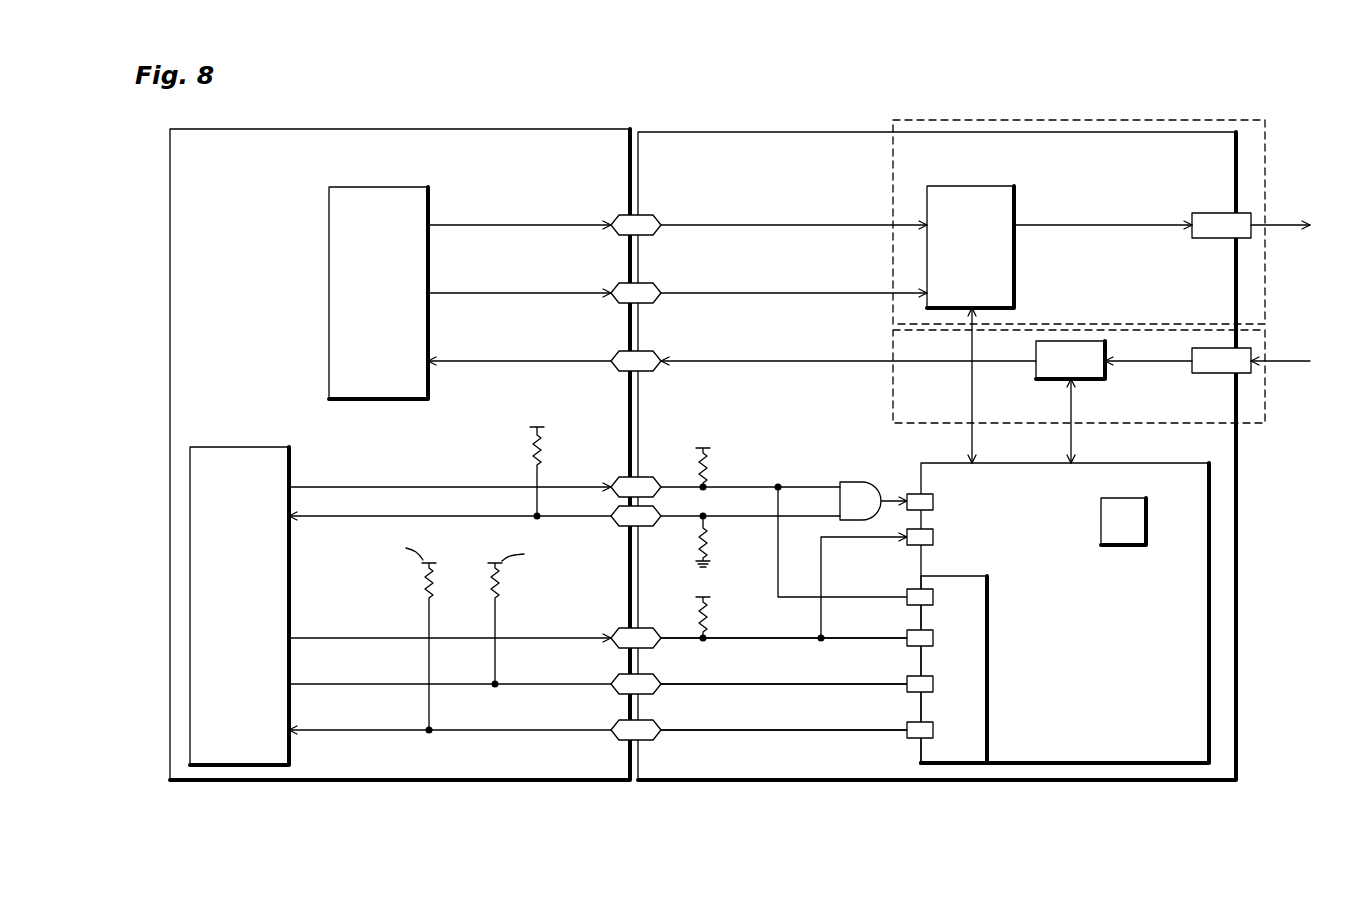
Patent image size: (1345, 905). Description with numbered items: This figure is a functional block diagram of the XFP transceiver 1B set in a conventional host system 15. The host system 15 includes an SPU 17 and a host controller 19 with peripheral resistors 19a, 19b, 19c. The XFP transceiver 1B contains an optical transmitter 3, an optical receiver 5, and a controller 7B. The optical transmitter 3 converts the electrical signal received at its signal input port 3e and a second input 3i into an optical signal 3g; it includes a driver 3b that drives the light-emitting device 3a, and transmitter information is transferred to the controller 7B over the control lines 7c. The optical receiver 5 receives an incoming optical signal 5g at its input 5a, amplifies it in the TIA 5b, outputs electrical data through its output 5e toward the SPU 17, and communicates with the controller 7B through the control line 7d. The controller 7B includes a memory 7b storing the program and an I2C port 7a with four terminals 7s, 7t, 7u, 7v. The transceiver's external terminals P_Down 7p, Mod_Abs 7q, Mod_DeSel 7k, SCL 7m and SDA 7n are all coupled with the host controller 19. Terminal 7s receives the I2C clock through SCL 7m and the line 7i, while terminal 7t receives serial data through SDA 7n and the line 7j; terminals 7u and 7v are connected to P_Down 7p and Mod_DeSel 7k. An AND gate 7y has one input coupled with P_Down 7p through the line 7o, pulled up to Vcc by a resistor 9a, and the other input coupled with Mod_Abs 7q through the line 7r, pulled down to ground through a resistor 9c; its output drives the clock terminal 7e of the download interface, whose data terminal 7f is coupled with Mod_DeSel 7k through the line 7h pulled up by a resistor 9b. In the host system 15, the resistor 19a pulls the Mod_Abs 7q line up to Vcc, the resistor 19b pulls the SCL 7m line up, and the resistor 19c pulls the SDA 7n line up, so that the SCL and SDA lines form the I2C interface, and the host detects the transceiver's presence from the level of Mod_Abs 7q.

The host system 15 is at (301, 129).
The SPU 17 is at (383, 187).
The host controller 19 is at (274, 447).
The resistor 19a is at (530, 449).
The resistor 19b is at (500, 583).
The resistor 19c is at (424, 580).
The XFP transceiver 1B is at (794, 132).
The optical transmitter 3 is at (1204, 120).
The light-emitting device 3a is at (1214, 213).
The driver 3b is at (974, 186).
The signal input port 3e is at (645, 215).
The optical signal 3g is at (1291, 225).
The transmit control terminal 3i is at (645, 283).
The optical receiver 5 is at (893, 347).
The receiver optical input 5a is at (1218, 373).
The TIA 5b is at (1036, 379).
The receive data terminal 5e is at (642, 351).
The optical input signal 5g is at (1291, 358).
The controller 7B is at (1175, 463).
The I2C port 7a is at (987, 700).
The memory 7b is at (1124, 545).
The control lines 7c is at (972, 437).
The control line 7d is at (1071, 437).
The clock terminal 7e is at (933, 502).
The data terminal 7f is at (933, 537).
The line 7h is at (782, 640).
The line 7i is at (782, 686).
The line 7j is at (782, 732).
The Mod_DeSel 7k is at (645, 628).
The SCL 7m is at (652, 674).
The SDA 7n is at (652, 720).
The line 7o is at (799, 487).
The P_Down 7p is at (645, 477).
The Mod_Abs 7q is at (648, 526).
The line 7r is at (809, 517).
The terminal 7s is at (933, 684).
The terminal 7t is at (933, 730).
The terminal 7u is at (933, 597).
The terminal 7v is at (933, 638).
The AND gate 7y is at (858, 482).
The resistor 9a is at (712, 465).
The resistor 9b is at (712, 620).
The resistor 9c is at (712, 540).